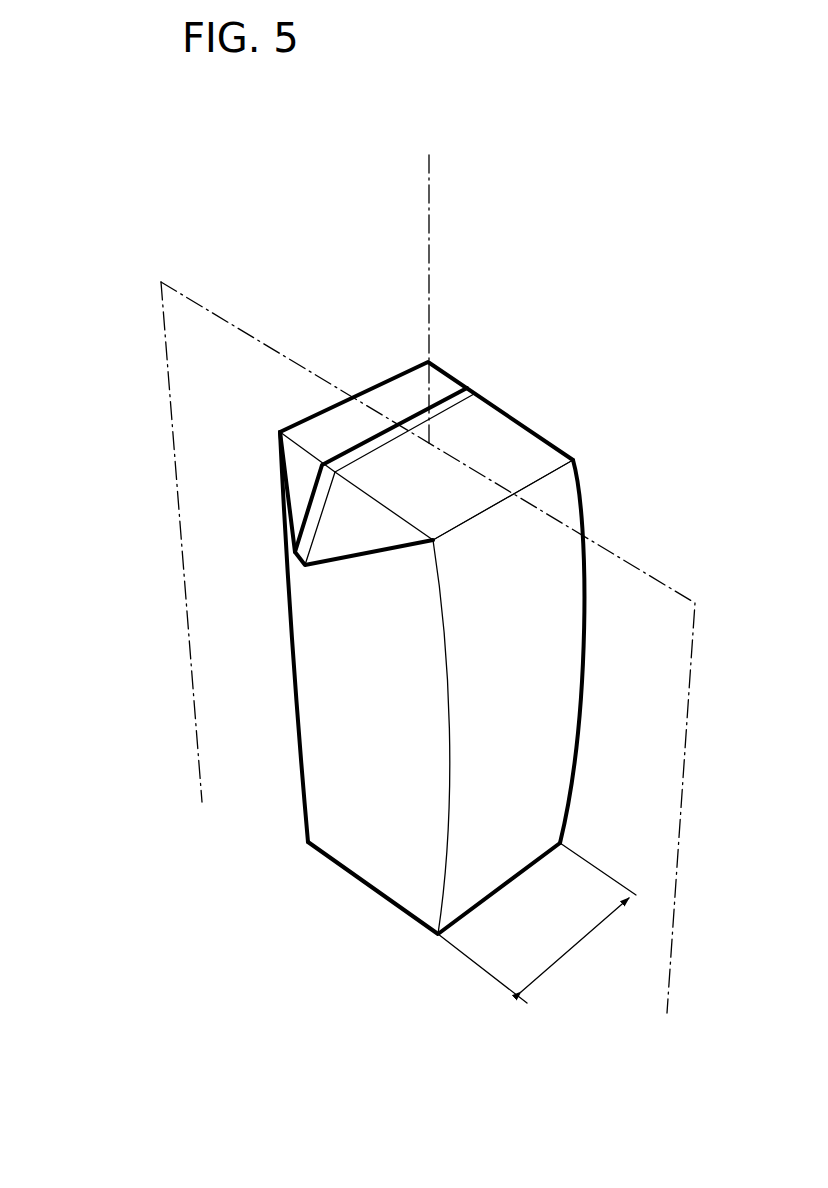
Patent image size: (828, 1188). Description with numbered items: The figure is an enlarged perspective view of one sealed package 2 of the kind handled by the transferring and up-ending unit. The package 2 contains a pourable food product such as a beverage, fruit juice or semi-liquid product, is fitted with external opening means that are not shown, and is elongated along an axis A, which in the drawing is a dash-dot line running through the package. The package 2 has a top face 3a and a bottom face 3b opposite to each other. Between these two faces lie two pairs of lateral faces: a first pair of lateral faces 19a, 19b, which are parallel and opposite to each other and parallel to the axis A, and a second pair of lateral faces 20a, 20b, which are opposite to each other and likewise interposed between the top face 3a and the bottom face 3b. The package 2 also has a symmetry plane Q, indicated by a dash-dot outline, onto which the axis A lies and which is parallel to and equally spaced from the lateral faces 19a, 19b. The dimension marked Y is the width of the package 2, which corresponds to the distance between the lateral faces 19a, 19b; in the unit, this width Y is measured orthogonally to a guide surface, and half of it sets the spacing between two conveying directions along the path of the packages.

The sealed package 2 is at (441, 629).
The top face 3a is at (491, 438).
The bottom face 3b is at (366, 911).
The lateral face 19a is at (374, 795).
The lateral face 19b is at (585, 480).
The lateral face 20a is at (285, 578).
The lateral face 20b is at (537, 694).
The axis A is at (427, 178).
The symmetry plane Q is at (190, 326).
The width Y is at (537, 923).